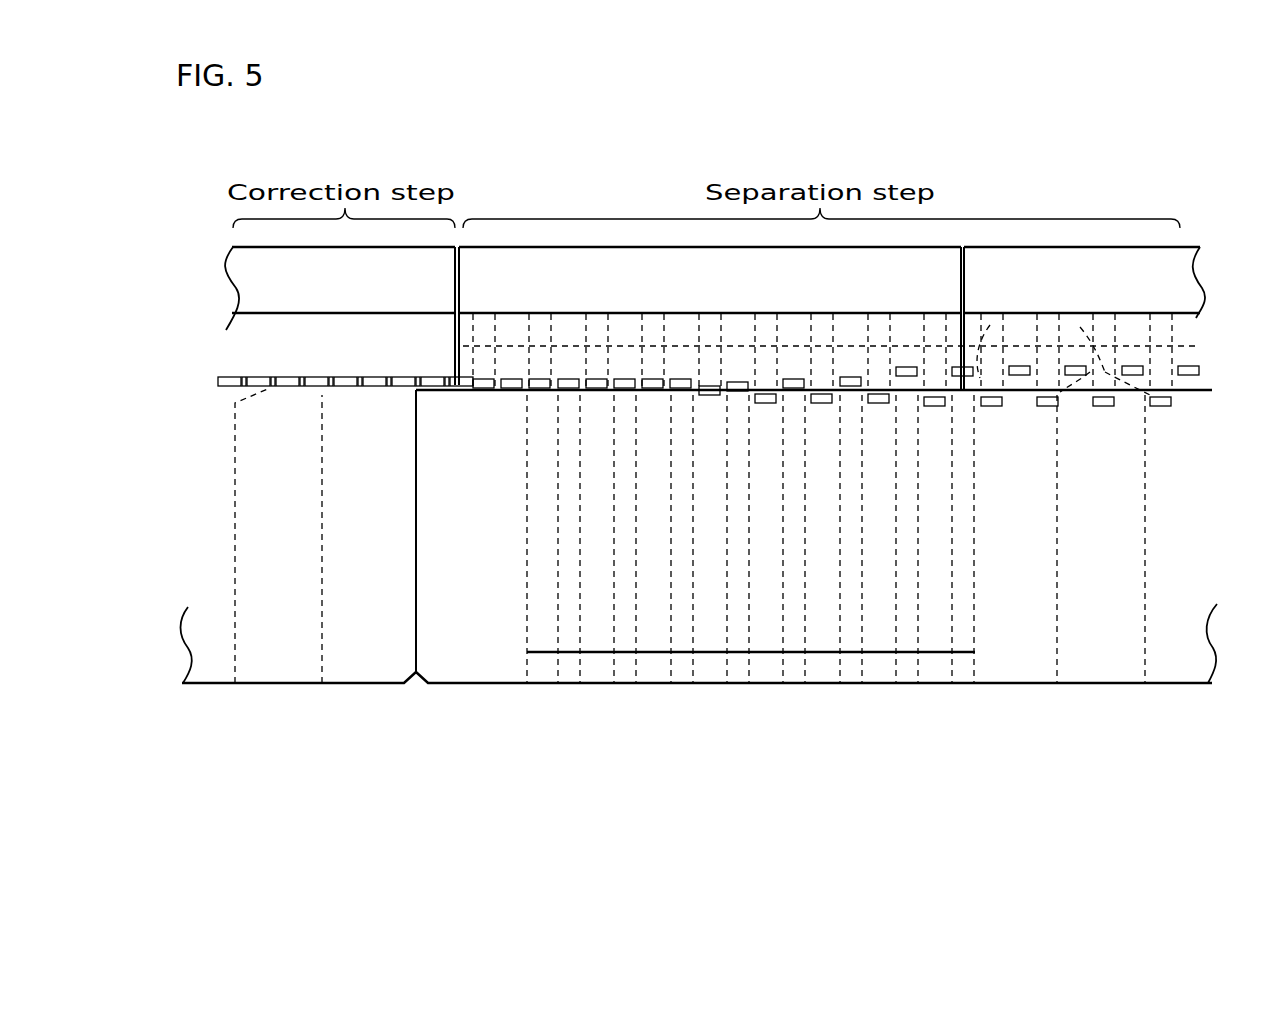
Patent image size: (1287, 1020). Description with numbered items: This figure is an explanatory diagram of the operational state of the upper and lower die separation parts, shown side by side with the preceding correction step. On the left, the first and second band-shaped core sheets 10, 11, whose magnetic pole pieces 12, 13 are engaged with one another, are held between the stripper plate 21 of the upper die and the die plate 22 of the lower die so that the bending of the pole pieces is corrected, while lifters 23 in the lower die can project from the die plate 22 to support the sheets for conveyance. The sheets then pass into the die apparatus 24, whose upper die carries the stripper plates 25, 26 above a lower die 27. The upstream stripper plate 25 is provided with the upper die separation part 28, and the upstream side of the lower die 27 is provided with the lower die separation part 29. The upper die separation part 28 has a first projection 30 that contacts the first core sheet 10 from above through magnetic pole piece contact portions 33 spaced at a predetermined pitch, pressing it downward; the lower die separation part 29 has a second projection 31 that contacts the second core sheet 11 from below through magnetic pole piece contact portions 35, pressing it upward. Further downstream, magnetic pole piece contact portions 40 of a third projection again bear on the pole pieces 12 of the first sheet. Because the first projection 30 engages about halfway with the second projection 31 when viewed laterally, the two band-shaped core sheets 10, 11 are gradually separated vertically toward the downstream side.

The first band-shaped stator core sheet 10 is at (370, 376).
The second band-shaped stator core sheet 11 is at (400, 376).
The magnetic pole pieces 12 is at (718, 390).
The magnetic pole pieces 13 is at (1135, 367).
The stripper plate 21 is at (245, 277).
The die plate 22 is at (360, 668).
The lifters 23 is at (289, 410).
The die apparatus 24 is at (905, 243).
The stripper plate 25 is at (656, 270).
The stripper plate 26 is at (1115, 258).
The lower die 27 is at (1190, 665).
The upper die separation part 28 is at (607, 312).
The lower die separation part 29 is at (760, 694).
The first projection 30 is at (463, 265).
The second projection 31 is at (553, 560).
The magnetic pole piece contact portions 33 is at (593, 327).
The magnetic pole piece contact portions 35 is at (683, 638).
The magnetic pole piece contact portions 40 is at (1080, 327).